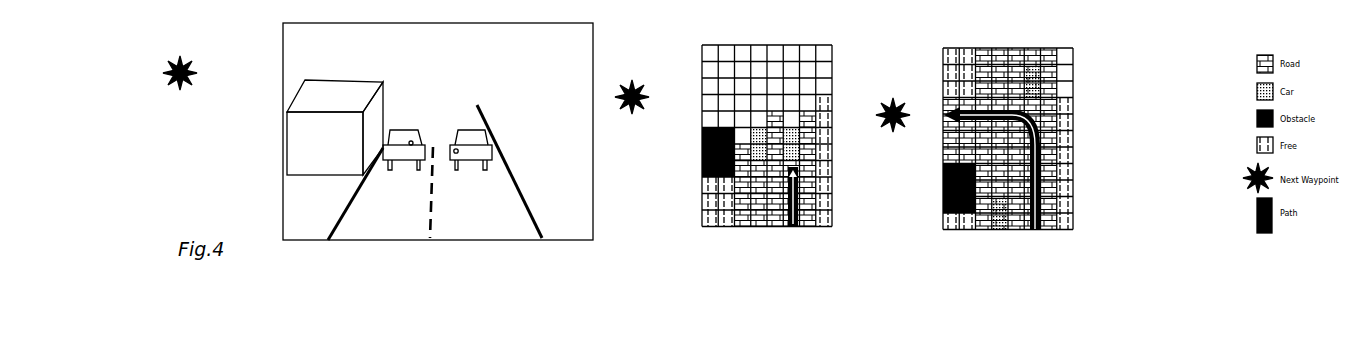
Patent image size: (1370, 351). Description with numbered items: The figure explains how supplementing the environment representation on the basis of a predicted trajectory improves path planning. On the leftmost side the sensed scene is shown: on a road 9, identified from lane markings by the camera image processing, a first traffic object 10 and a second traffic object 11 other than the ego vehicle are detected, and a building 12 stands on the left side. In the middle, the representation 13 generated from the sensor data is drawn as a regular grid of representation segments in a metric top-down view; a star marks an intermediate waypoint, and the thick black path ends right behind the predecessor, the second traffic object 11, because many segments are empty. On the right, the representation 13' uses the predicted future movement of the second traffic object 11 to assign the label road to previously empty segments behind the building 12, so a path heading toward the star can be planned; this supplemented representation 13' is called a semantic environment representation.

The road 9 is at (497, 204).
The first traffic object 10 is at (402, 156).
The second traffic object 11 is at (485, 153).
The building 12 is at (345, 93).
The representation 13 is at (792, 140).
The supplemented representation 13' is at (1037, 141).